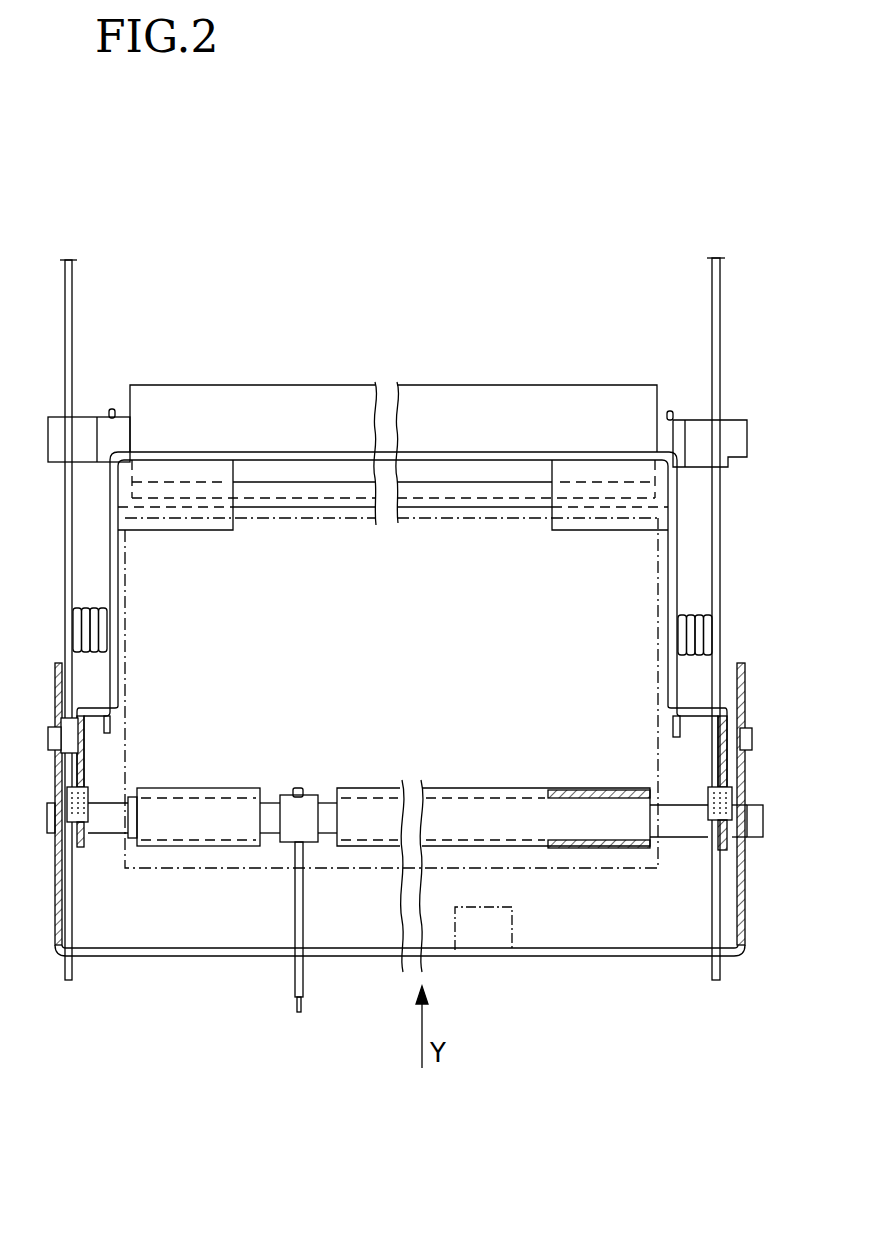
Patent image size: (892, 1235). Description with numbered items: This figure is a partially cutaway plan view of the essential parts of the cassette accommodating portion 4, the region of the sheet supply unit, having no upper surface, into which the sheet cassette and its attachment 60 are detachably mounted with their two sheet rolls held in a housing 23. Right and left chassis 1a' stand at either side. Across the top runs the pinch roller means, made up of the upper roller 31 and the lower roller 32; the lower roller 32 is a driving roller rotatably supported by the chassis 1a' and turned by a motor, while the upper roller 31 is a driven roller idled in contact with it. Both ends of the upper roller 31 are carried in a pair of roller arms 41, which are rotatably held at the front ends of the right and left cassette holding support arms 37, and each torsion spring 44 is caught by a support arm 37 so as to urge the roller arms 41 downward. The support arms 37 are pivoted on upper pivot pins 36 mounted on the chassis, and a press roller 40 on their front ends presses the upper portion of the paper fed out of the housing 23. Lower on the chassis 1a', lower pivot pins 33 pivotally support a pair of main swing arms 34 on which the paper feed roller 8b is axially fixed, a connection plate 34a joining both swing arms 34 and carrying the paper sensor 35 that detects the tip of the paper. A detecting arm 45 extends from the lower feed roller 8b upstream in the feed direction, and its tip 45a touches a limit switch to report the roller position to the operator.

The chassis 1a' is at (392, 616).
The roller arm 41 is at (113, 409).
The upper roller 31 is at (393, 423).
The lower roller 32 is at (287, 410).
The cassette holding support arm 37 is at (122, 566).
The press roller 40 is at (185, 470).
The cassette accommodating portion 4 is at (393, 414).
The attachment 60 is at (492, 495).
The housing 23 is at (432, 520).
The torsion spring 44 is at (88, 630).
The main swing arm 34 is at (412, 836).
The connection plate 34a is at (192, 958).
The lower pivot pin 33 is at (68, 738).
The upper pivot pin 36 is at (82, 795).
The paper feed roller 8b is at (512, 835).
The detecting arm 45 is at (307, 921).
The tip 45a is at (302, 1010).
The paper sensor 35 is at (474, 930).